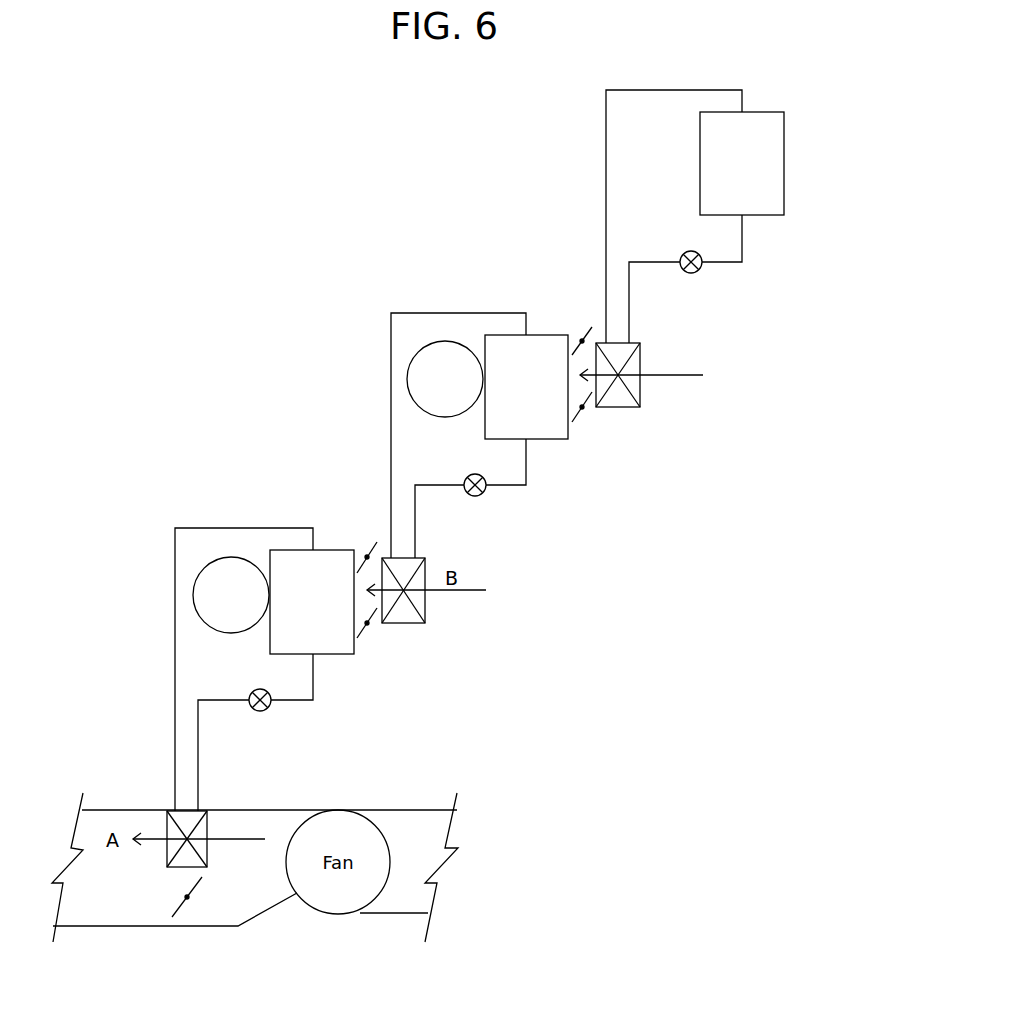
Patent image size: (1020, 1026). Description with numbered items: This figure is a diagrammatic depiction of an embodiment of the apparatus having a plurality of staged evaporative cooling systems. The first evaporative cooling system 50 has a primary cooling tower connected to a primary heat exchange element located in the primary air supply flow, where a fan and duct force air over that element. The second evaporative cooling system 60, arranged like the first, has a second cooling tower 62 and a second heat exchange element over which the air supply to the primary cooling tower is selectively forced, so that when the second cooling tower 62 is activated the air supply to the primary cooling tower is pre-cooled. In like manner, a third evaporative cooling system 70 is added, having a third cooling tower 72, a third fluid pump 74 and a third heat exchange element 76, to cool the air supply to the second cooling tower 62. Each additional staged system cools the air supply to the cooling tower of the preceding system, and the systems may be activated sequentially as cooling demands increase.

The first evaporative cooling system 50 is at (233, 520).
The second evaporative cooling system 60 is at (492, 401).
The second cooling tower 62 is at (550, 440).
The third evaporative cooling system 70 is at (725, 181).
The third cooling tower 72 is at (785, 133).
The third fluid pump 74 is at (693, 273).
The third heat exchange element 76 is at (620, 408).